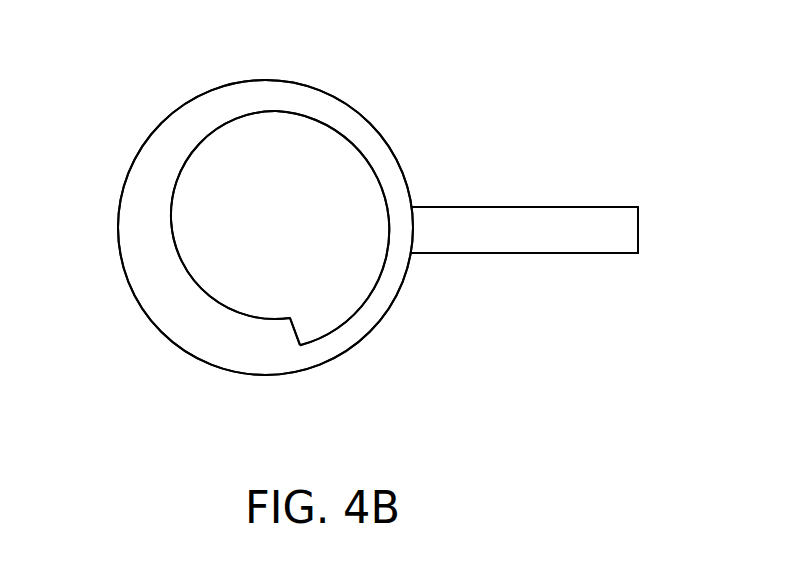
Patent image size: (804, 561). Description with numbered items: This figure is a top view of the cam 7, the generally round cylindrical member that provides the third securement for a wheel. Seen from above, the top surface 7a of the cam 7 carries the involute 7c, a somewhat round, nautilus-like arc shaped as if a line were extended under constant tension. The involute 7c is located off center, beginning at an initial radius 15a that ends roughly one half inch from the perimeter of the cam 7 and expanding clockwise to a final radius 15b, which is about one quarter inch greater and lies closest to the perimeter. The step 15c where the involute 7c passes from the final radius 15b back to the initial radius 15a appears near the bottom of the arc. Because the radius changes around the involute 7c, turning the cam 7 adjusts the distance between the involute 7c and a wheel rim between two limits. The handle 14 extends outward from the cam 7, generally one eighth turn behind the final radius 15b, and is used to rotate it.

The cam 7 is at (150, 80).
The top surface 7a is at (137, 212).
The involute 7c is at (340, 158).
The handle 14 is at (541, 220).
The initial radius 15a is at (200, 277).
The final radius 15b is at (362, 278).
The step between inner surface portions 15c is at (297, 328).